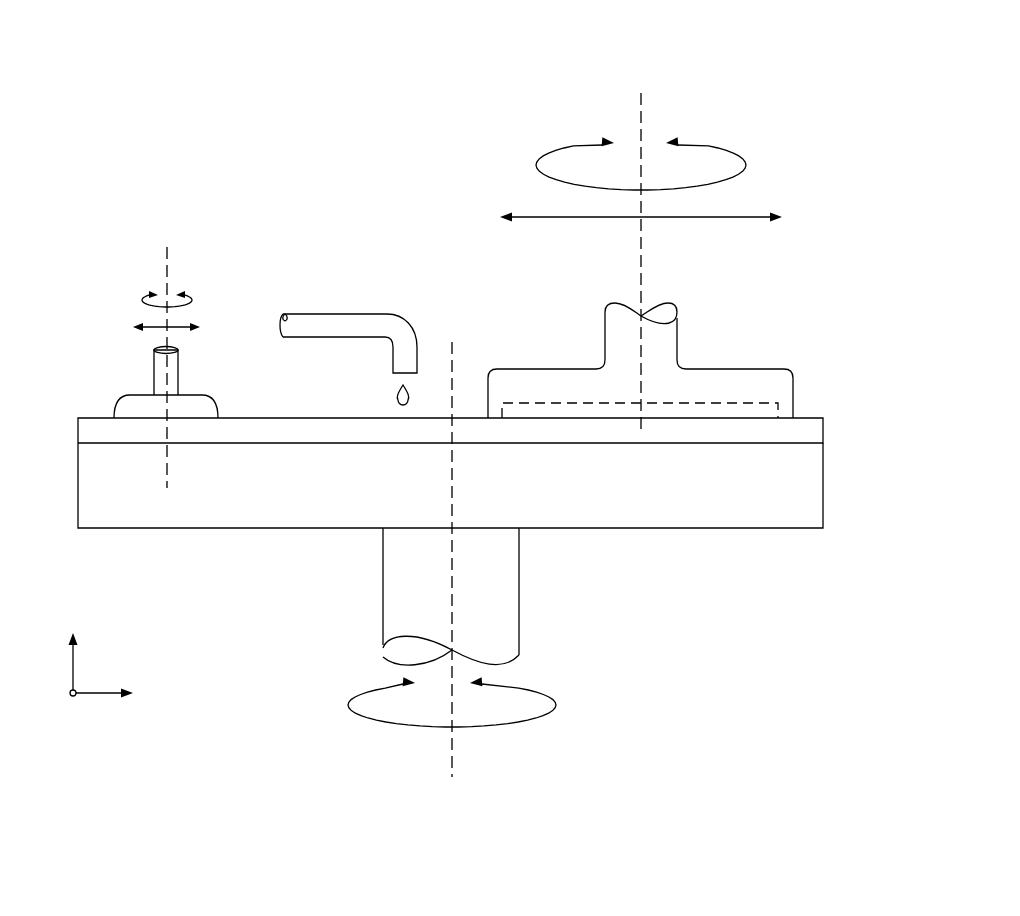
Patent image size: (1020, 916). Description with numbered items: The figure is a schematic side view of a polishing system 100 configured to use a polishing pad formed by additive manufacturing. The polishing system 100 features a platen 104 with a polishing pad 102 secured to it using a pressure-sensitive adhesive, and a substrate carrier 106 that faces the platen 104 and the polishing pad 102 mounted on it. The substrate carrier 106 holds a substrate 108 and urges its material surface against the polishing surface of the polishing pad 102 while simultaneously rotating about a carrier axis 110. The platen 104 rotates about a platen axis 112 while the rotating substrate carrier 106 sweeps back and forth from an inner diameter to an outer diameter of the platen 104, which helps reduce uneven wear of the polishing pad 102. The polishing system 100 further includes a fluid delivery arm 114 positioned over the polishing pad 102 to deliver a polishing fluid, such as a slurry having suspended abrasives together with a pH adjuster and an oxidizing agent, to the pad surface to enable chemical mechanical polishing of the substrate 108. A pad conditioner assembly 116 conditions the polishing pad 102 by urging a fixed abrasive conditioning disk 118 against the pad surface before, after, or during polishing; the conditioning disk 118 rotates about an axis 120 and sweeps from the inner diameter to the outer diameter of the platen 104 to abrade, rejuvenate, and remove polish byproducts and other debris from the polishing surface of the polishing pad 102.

The polishing system 100 is at (788, 55).
The polishing pad 102 is at (816, 435).
The platen 104 is at (742, 497).
The substrate carrier 106 is at (793, 392).
The substrate 108 is at (603, 407).
The carrier axis 110 is at (643, 101).
The platen axis 112 is at (452, 750).
The fluid delivery arm 114 is at (350, 312).
The pad conditioner assembly 116 is at (154, 357).
The conditioning disk 118 is at (200, 403).
The axis 120 is at (170, 252).